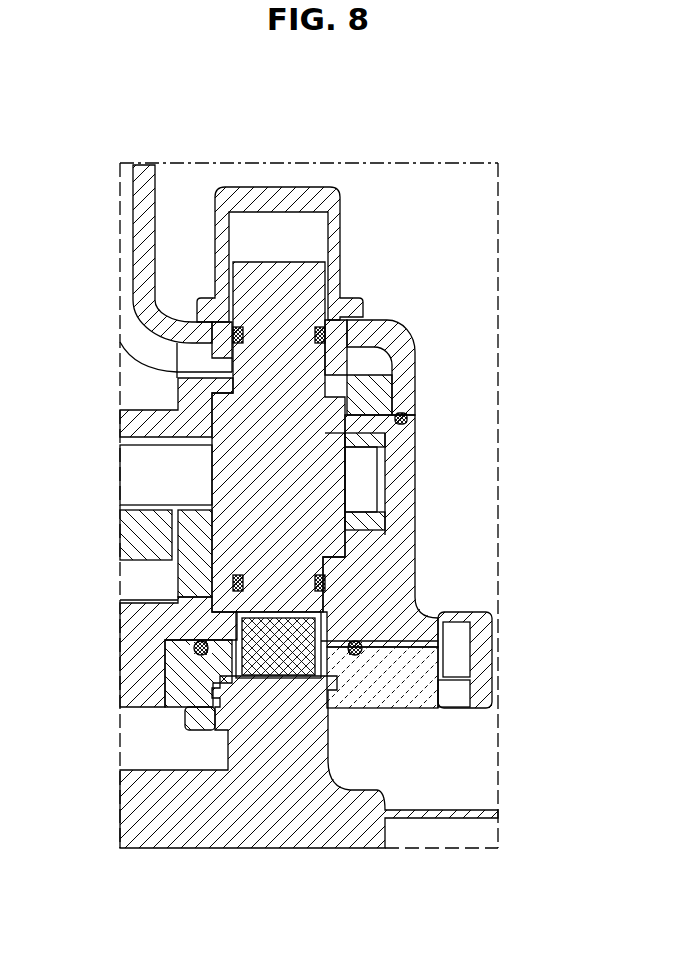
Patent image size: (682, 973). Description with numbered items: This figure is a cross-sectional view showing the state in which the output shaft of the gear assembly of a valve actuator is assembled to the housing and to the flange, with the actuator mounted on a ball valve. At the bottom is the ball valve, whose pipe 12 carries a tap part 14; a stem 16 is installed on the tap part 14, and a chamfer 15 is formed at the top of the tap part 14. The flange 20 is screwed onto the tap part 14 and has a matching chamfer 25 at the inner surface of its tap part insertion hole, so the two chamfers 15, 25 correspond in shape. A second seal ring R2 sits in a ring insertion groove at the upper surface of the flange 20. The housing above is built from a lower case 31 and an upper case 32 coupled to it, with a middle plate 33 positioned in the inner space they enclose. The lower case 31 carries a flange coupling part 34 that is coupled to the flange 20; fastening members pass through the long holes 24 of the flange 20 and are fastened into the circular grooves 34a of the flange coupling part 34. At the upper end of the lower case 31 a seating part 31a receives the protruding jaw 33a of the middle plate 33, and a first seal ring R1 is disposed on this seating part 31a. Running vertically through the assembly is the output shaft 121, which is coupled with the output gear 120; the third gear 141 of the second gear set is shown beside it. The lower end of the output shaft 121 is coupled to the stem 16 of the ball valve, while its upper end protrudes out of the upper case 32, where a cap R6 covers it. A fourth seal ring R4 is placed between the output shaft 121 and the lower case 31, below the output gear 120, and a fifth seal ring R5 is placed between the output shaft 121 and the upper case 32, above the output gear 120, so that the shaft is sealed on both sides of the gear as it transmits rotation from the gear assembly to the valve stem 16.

The pipe 12 is at (130, 800).
The tap part 14 is at (192, 714).
The chamfer 15 is at (224, 678).
The stem 16 is at (213, 655).
The flange 20 is at (478, 695).
The long holes 24 is at (453, 702).
The chamfer 25 is at (305, 677).
The lower case 31 is at (416, 530).
The seating part 31a is at (402, 440).
The upper case 32 is at (412, 357).
The middle plate 33 is at (127, 422).
The protruding jaw 33a is at (395, 381).
The flange coupling part 34 is at (480, 626).
The circular grooves 34a is at (462, 662).
The output gear 120 is at (130, 468).
The output shaft 121 is at (312, 483).
The third gear 141 is at (130, 530).
The first seal ring R1 is at (408, 418).
The second seal ring R2 is at (198, 647).
The fourth seal ring R4 is at (235, 583).
The fifth seal ring R5 is at (303, 332).
The cap R6 is at (250, 200).